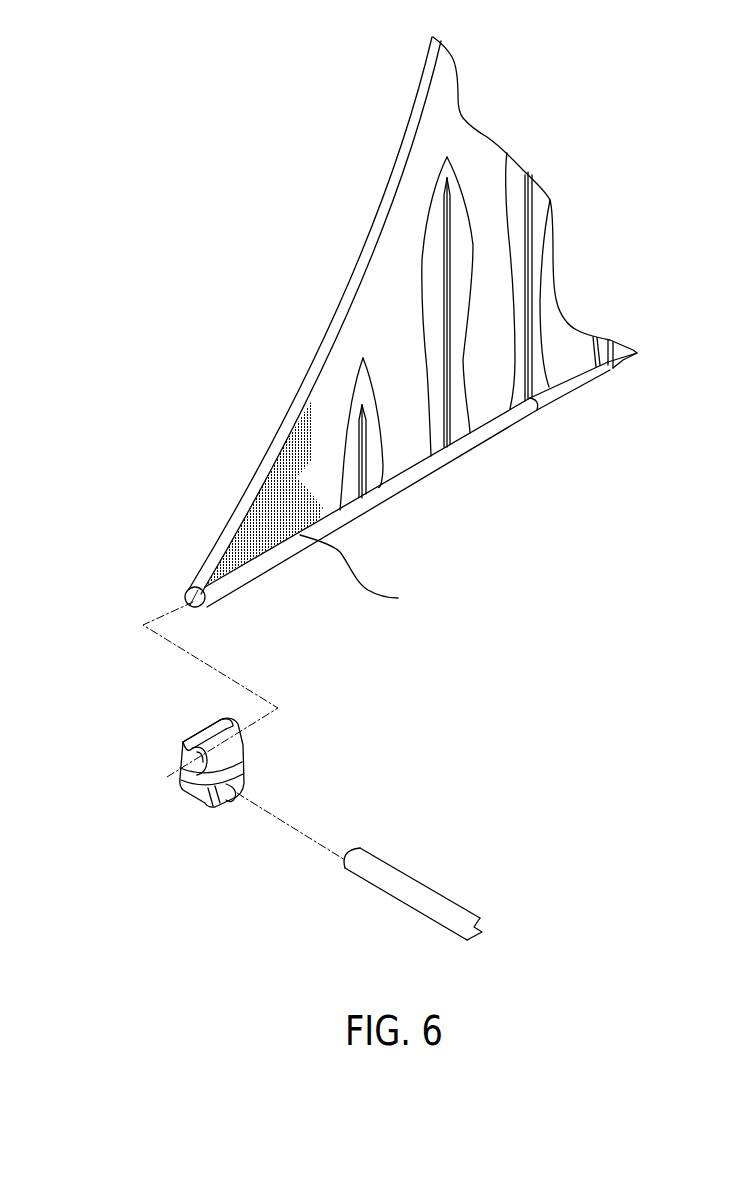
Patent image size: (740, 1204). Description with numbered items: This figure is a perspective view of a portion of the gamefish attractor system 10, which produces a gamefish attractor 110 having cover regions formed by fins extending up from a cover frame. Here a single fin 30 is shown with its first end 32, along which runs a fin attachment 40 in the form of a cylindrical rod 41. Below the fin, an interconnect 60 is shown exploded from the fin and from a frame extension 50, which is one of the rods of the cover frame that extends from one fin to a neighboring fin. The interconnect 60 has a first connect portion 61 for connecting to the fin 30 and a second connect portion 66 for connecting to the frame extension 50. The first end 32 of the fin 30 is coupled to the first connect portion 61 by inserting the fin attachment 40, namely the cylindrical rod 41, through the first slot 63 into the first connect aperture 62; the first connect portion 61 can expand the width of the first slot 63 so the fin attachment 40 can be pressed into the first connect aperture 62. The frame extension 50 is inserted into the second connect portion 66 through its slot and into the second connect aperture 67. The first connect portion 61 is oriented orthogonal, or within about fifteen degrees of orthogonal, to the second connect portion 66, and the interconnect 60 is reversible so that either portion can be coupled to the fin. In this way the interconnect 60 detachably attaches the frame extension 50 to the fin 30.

The gamefish attractor system 10 is at (226, 201).
The gamefish attractor 110 is at (397, 128).
The fin 30 is at (375, 285).
The first end 32 is at (187, 588).
The fin attachment 40 is at (253, 566).
The cylindrical rod 41 is at (363, 574).
The frame extension 50 is at (387, 882).
The interconnect 60 is at (182, 723).
The first connect portion 61 is at (184, 750).
The first connect aperture 62 is at (188, 764).
The first slot 63 is at (220, 721).
The second connect portion 66 is at (197, 793).
The second connect aperture 67 is at (230, 798).